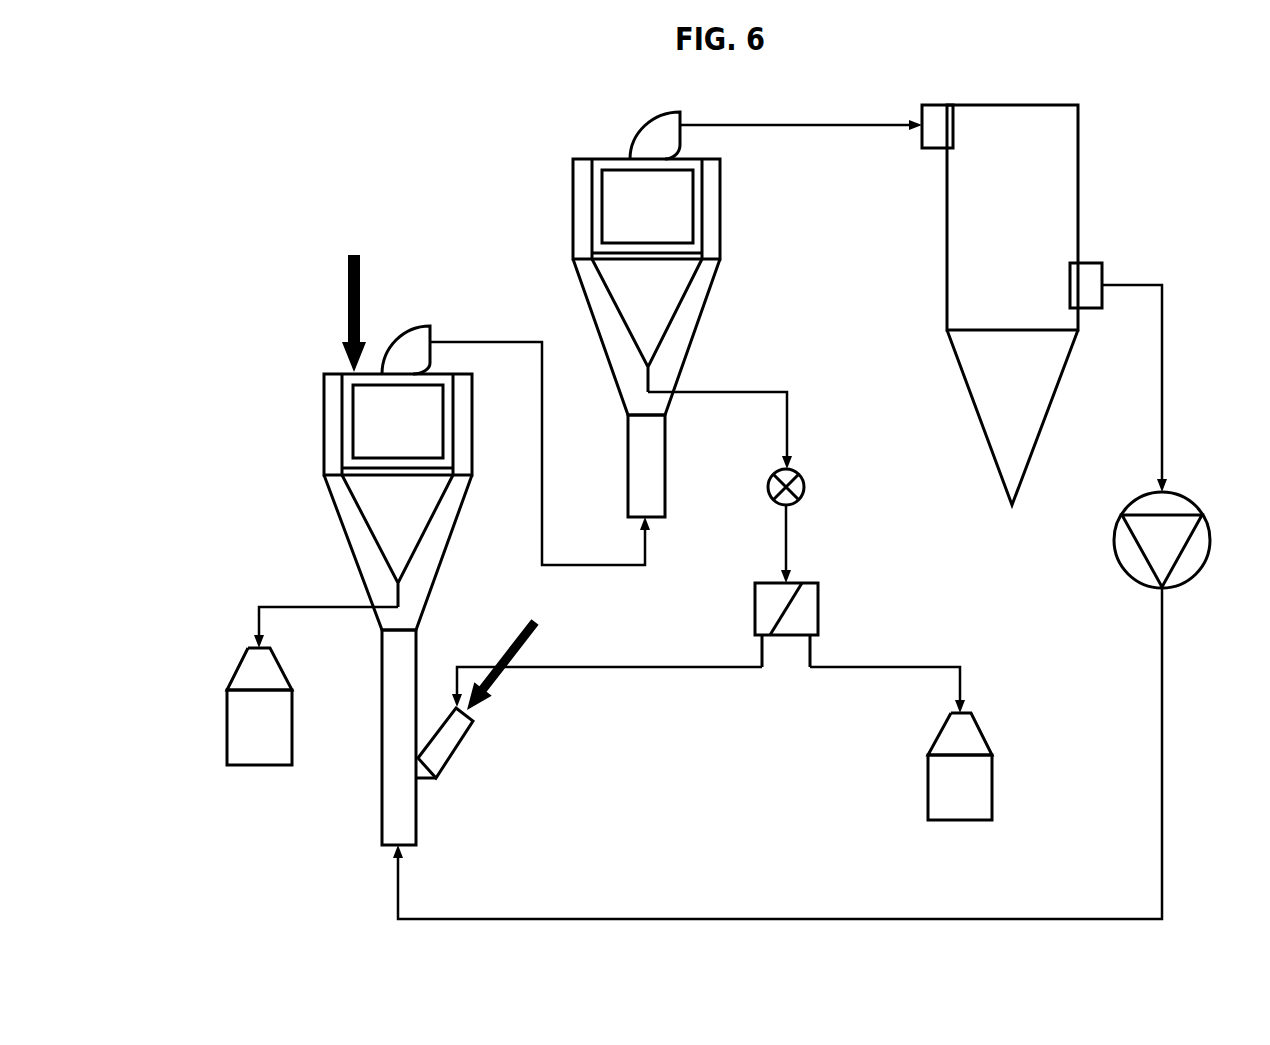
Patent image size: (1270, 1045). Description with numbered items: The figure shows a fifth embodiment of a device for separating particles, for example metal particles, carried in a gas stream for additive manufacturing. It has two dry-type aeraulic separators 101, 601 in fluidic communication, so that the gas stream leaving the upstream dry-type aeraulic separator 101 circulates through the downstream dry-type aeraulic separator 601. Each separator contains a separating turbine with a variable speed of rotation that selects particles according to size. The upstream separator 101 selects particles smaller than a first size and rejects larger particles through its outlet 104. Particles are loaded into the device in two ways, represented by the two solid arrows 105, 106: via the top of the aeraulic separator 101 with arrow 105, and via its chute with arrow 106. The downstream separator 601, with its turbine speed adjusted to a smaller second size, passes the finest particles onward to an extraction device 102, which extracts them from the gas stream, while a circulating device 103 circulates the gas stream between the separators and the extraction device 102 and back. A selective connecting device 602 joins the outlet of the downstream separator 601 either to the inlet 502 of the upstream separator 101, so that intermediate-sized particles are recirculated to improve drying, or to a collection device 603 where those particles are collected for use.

The dry-type aeraulic separator 101 is at (318, 543).
The extraction device 102 is at (1109, 196).
The gas stream circulating device 103 is at (1090, 554).
The outlet 104 is at (207, 670).
The solid arrow (loading via top) 105 is at (354, 256).
The solid arrow (loading via chute) 106 is at (535, 622).
The inlet 502 is at (472, 751).
The downstream dry-type aeraulic separator 601 is at (728, 320).
The selective connecting device 602 is at (838, 612).
The collection device 603 is at (818, 488).